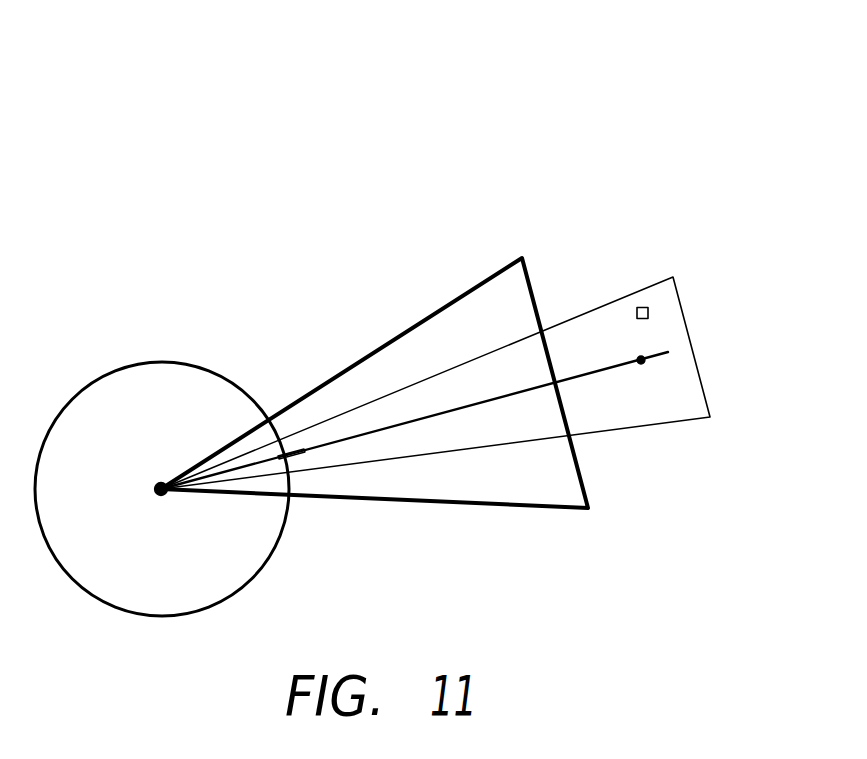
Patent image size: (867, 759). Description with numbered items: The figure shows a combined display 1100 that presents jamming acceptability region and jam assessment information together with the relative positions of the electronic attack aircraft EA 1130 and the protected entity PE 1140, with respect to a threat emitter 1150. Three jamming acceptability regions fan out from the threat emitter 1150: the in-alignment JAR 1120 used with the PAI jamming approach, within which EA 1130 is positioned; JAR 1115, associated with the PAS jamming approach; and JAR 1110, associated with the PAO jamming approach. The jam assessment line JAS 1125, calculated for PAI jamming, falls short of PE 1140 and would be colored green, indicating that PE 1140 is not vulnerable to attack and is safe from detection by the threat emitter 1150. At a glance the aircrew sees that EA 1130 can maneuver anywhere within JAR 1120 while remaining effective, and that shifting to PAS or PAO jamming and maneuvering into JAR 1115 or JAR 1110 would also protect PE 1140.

The view frustum diagram 1100 is at (262, 244).
The JAR for PAO jamming 1110 is at (95, 381).
The JAR for PAS jamming 1115 is at (584, 476).
The in-alignment JAR 1120 is at (708, 395).
The JAS 1125 is at (360, 437).
The EA 1130 is at (638, 310).
The PE 1140 is at (641, 358).
The threat emitter 1150 is at (156, 490).